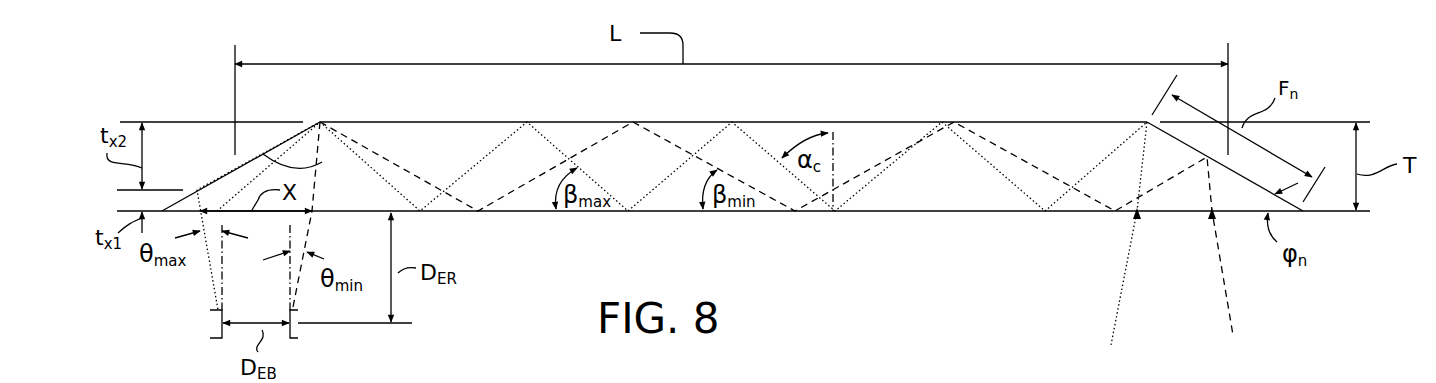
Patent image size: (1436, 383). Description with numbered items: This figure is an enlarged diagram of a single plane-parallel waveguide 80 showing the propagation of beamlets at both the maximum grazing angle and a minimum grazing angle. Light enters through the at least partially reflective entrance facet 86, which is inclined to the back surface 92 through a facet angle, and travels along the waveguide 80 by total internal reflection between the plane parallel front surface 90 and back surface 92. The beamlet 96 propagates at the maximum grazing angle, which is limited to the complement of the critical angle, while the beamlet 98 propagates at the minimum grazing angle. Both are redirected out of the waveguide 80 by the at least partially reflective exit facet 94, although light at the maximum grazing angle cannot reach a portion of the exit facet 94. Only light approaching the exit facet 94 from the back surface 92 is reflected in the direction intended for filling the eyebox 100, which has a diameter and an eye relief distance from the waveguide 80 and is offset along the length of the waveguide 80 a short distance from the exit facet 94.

The waveguide 80 is at (904, 121).
The entrance facet 86 is at (1178, 143).
The front surface 90 is at (480, 122).
The back surface 92 is at (909, 214).
The exit facet 94 is at (320, 163).
The beamlet 96 is at (1000, 180).
The beamlet 98 is at (1050, 177).
The eyebox 100 is at (231, 338).